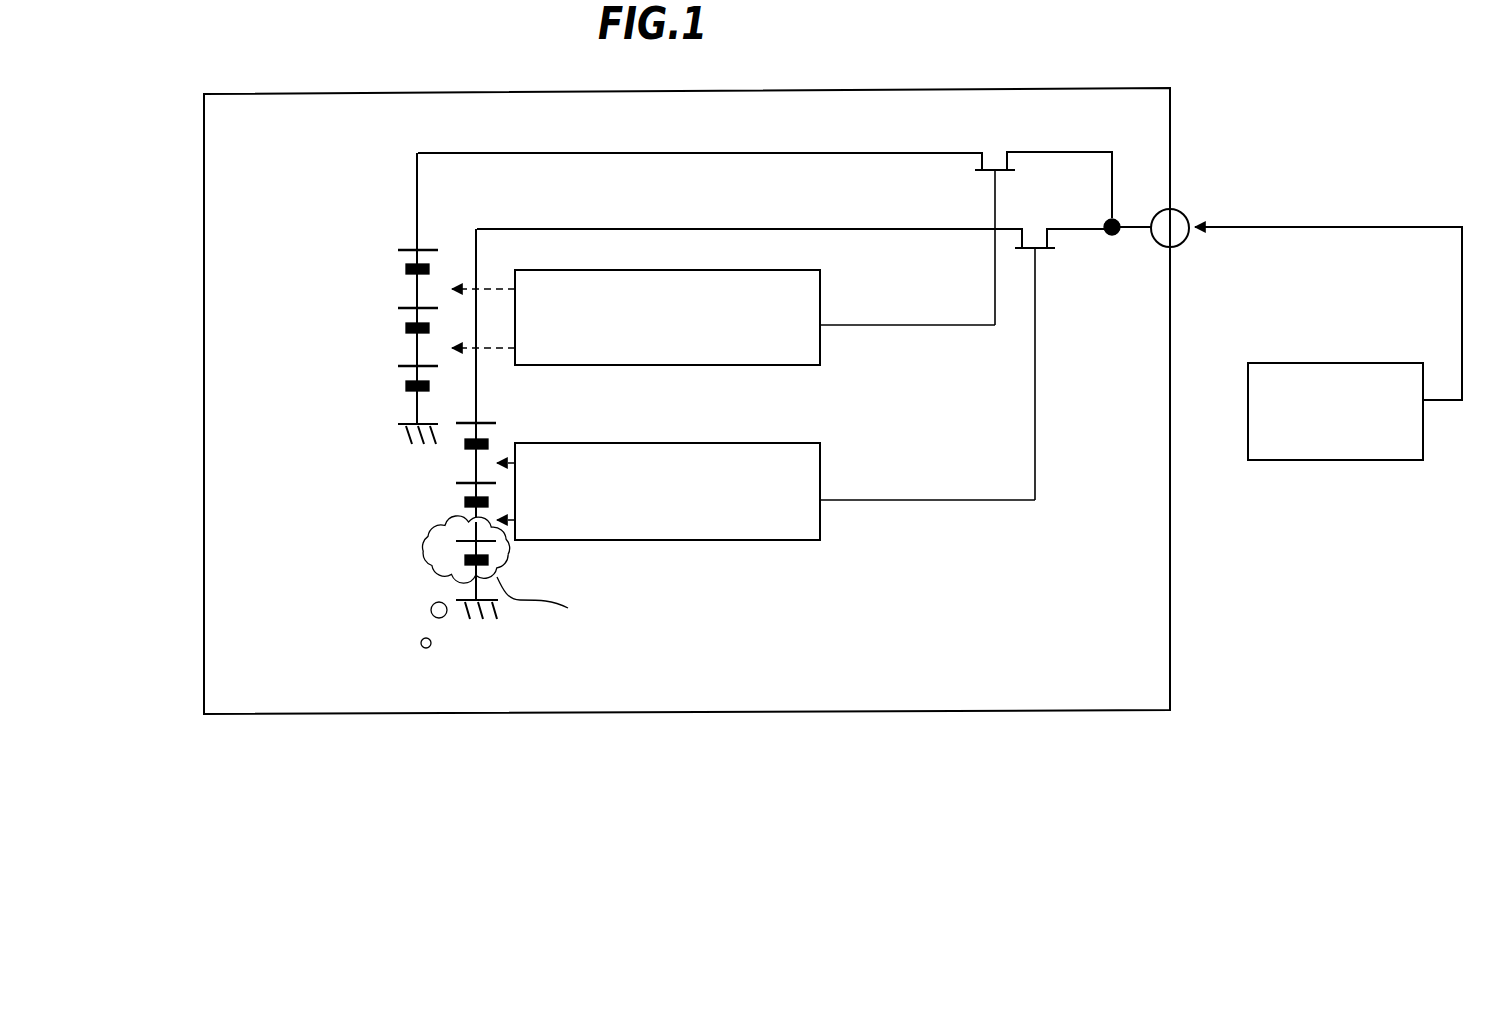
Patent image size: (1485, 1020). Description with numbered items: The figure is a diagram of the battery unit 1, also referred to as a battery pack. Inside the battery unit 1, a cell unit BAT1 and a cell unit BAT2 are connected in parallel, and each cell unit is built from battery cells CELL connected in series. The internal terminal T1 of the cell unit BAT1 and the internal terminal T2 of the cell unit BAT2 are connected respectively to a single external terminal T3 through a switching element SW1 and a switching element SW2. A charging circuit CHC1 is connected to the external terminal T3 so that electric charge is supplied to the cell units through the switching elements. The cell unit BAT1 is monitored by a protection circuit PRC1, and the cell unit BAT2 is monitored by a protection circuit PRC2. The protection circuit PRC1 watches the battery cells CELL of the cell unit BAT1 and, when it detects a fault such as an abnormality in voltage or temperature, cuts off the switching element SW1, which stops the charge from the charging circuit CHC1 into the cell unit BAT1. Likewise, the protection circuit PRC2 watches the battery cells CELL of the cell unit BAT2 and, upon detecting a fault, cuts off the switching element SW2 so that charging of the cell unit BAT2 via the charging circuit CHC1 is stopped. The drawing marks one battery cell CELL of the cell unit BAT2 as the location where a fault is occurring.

The battery unit 1 is at (204, 126).
The internal terminal T1 is at (428, 150).
The internal terminal T2 is at (485, 227).
The external terminal T3 is at (1190, 208).
The switching element SW1 is at (995, 148).
The switching element SW2 is at (1035, 230).
The cell unit BAT1 is at (376, 359).
The cell unit BAT2 is at (412, 608).
The battery cell CELL is at (398, 317).
The protection circuit PRC1 is at (820, 282).
The protection circuit PRC2 is at (662, 443).
The charging circuit CHC1 is at (1302, 362).